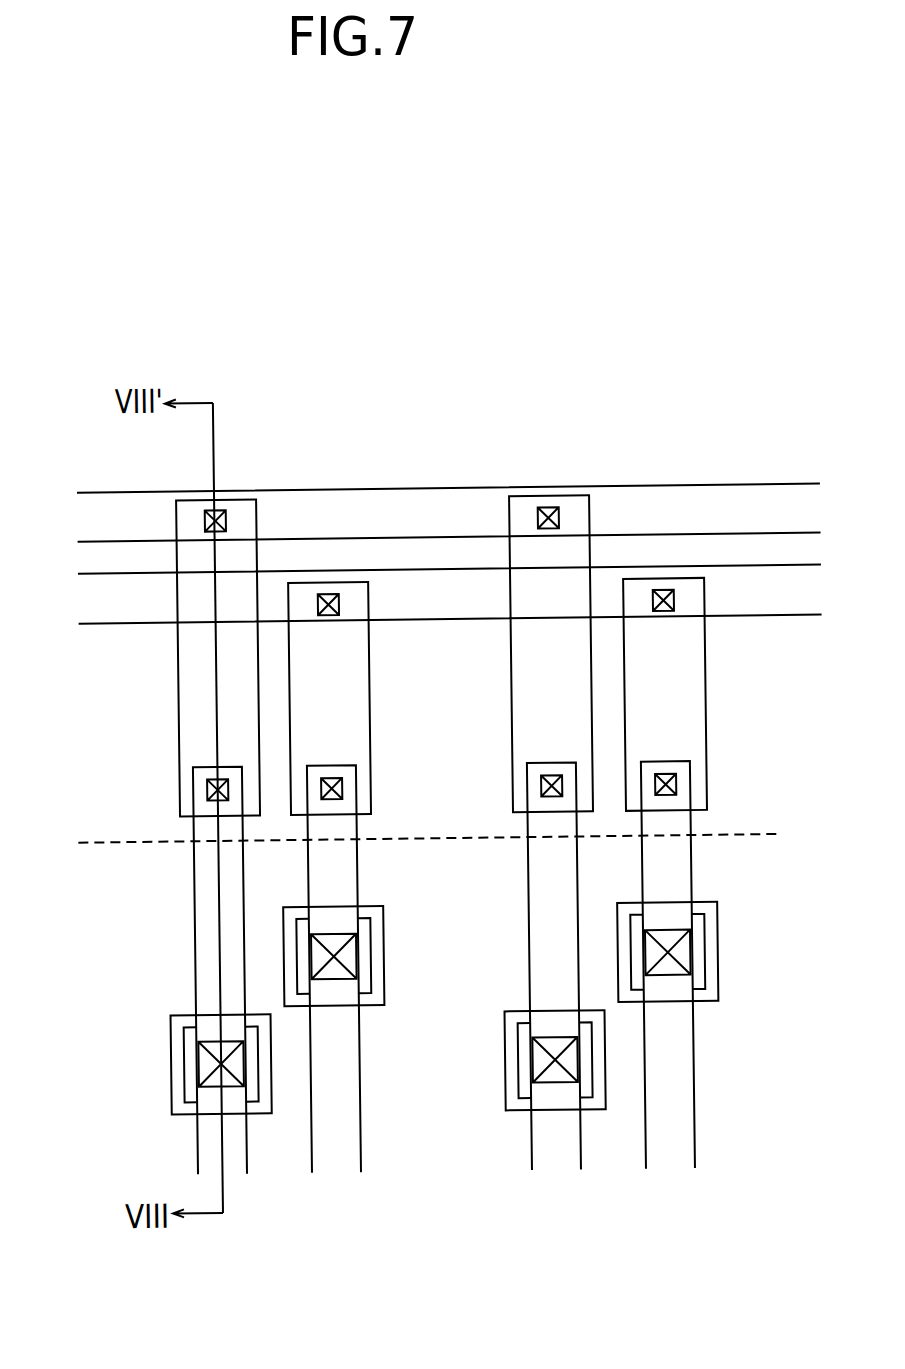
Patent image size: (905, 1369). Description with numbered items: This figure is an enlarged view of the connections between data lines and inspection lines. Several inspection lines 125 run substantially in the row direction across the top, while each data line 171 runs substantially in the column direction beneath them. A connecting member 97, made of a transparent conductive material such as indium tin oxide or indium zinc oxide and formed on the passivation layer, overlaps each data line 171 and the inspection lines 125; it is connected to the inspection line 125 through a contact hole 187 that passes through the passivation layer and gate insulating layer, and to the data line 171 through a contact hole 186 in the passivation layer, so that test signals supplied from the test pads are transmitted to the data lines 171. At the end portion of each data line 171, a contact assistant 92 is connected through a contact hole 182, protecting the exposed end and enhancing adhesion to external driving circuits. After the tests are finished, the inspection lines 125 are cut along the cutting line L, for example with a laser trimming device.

The inspection line 125 is at (99, 490).
The connecting member 97 is at (176, 728).
The contact hole 187 is at (226, 516).
The data line 171 is at (189, 900).
The contact hole 186 is at (203, 789).
The contact assistant 92 is at (164, 1100).
The contact hole 182 is at (207, 1087).
The cutting line L is at (89, 839).